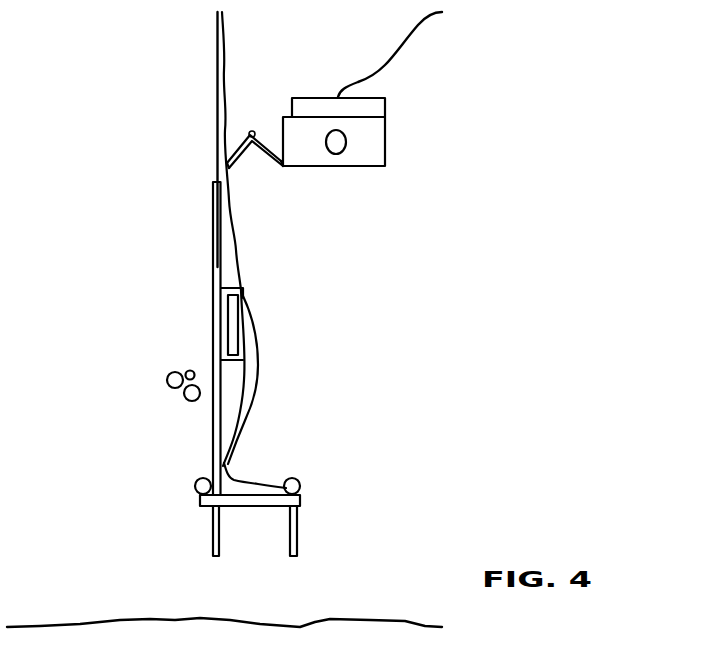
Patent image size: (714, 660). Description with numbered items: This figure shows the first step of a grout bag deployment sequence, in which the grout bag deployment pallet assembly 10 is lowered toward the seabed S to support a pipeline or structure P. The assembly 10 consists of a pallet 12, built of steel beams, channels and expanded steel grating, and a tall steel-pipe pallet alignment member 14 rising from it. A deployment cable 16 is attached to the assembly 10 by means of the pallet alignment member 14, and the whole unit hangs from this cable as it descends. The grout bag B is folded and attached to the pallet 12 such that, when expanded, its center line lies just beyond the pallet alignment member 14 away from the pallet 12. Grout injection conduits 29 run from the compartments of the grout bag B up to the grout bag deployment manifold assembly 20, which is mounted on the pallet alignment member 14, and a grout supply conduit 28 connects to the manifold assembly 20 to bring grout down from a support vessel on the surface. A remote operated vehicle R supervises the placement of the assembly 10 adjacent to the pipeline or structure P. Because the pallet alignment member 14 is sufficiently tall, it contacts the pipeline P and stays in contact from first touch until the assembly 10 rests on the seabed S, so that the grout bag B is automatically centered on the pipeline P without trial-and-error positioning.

The grout bag deployment pallet assembly 10 is at (197, 223).
The pallet 12 is at (300, 502).
The pallet alignment member 14 is at (213, 297).
The deployment cable 16 is at (216, 118).
The grout bag deployment manifold assembly 20 is at (243, 299).
The grout supply conduit 28 is at (237, 247).
The grout injection conduits 29 is at (237, 430).
The grout bag B is at (258, 482).
The pipeline or structure P is at (165, 378).
The remote operated vehicle R is at (385, 148).
The seabed S is at (166, 618).